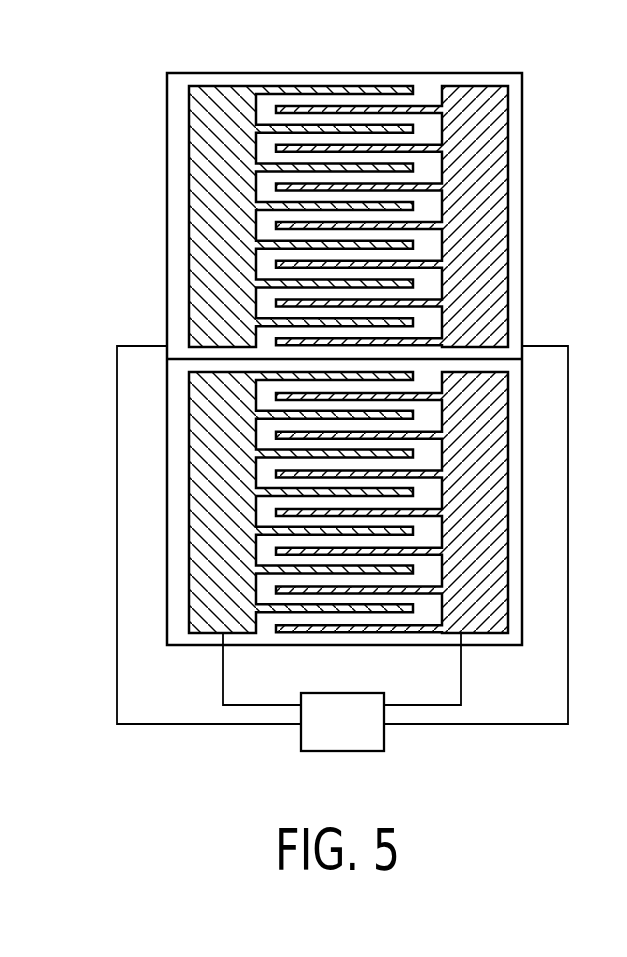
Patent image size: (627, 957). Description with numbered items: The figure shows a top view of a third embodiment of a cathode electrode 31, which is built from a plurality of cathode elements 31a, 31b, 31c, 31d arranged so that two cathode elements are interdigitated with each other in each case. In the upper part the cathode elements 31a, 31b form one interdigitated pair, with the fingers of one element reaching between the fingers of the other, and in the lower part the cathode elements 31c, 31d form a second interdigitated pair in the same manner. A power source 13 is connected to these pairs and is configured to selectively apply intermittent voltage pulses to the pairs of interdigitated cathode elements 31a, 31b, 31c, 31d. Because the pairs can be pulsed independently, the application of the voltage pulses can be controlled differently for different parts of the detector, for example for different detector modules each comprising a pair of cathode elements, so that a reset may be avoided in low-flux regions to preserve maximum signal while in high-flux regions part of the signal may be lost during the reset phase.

The cathode electrode 31 is at (106, 81).
The cathode element 31a is at (189, 207).
The cathode element 31b is at (508, 103).
The cathode element 31c is at (194, 637).
The cathode element 31d is at (497, 637).
The power source 13 is at (385, 748).